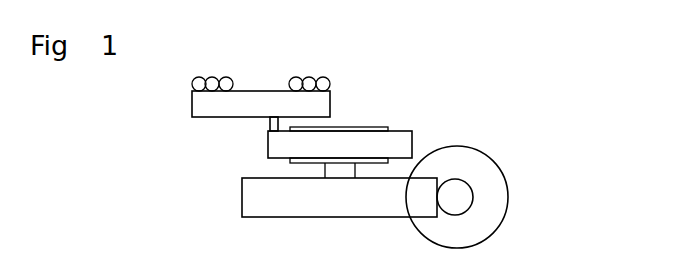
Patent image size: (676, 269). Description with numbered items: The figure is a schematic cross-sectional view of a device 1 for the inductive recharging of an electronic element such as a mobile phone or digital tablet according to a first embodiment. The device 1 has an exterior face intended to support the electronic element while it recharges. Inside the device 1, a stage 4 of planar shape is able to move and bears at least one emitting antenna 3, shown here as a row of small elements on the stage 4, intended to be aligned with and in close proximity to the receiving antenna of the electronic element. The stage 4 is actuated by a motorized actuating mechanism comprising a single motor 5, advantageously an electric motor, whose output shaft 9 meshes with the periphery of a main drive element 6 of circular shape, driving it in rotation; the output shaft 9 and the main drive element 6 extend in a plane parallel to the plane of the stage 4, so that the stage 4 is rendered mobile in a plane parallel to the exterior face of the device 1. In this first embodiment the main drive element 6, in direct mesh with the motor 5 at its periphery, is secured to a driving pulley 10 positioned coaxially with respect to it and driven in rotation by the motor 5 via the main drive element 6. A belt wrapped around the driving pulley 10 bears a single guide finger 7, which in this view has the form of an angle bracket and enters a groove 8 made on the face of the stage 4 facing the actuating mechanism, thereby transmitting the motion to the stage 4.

The device 1 is at (423, 128).
The emitting antenna 3 is at (296, 77).
The stage 4 is at (322, 99).
The motor 5 is at (470, 163).
The main drive element 6 is at (272, 195).
The guide finger 7 is at (272, 128).
The groove 8 is at (271, 122).
The output shaft 9 is at (455, 197).
The driving pulley 10 is at (380, 128).